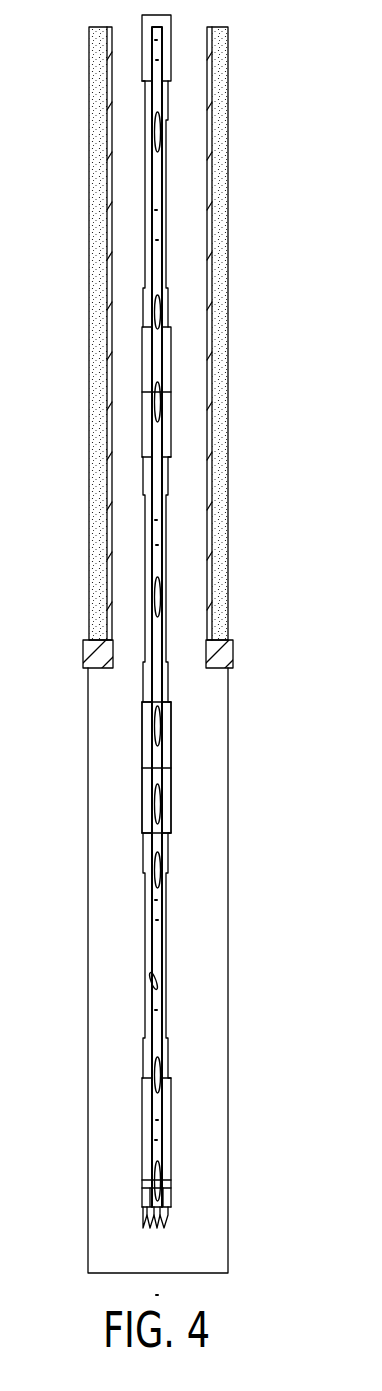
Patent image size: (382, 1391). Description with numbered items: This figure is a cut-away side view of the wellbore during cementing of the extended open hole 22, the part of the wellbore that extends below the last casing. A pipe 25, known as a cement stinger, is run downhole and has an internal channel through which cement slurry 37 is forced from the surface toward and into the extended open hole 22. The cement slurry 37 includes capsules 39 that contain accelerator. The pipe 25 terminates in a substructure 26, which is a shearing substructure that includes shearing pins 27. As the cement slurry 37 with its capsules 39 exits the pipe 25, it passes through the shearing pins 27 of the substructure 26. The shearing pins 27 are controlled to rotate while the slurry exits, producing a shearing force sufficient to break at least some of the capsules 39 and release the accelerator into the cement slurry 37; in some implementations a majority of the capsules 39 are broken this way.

The extended open hole 22 is at (67, 672).
The pipe 25 is at (163, 845).
The cement slurry 37 is at (157, 932).
The capsules 39 is at (157, 983).
The substructure 26 is at (163, 1200).
The shearing pins 27 is at (168, 1218).